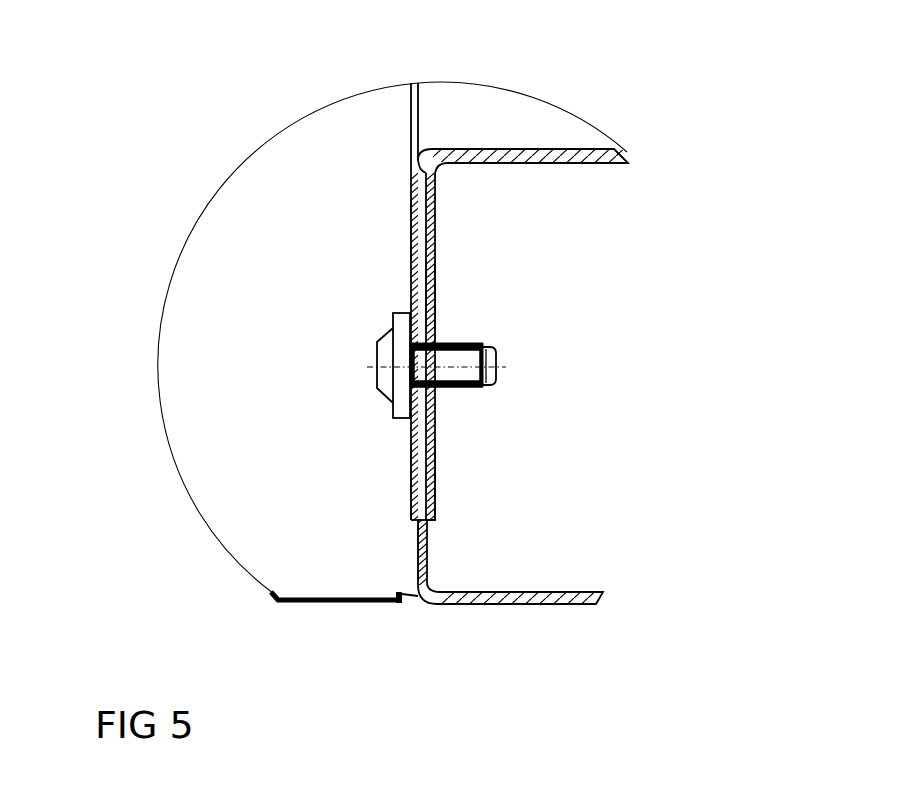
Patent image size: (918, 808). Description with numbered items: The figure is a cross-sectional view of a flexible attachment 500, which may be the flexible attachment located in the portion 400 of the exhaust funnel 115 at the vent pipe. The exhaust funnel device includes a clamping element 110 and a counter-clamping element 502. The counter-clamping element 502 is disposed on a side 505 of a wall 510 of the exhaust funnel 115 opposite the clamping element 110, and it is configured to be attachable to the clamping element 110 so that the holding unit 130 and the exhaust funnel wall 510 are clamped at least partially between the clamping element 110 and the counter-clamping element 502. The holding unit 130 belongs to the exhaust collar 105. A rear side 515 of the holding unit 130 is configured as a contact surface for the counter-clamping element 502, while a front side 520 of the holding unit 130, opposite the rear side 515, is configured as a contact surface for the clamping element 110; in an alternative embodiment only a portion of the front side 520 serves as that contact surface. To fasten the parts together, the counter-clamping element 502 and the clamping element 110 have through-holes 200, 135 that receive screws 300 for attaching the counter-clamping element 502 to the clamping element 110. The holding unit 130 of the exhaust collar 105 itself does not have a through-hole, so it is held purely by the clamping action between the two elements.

The exhaust collar 105 is at (515, 148).
The clamping element 110 is at (410, 483).
The exhaust funnel 115 is at (490, 605).
The holding unit 130 is at (412, 173).
The through-hole 135 is at (418, 350).
The through-hole 200 is at (443, 397).
The screw 300 is at (377, 355).
The portion 400 is at (245, 157).
The flexible attachment 500 is at (325, 158).
The counter-clamping element 502 is at (433, 295).
The side 505 is at (440, 553).
The wall 510 is at (417, 547).
The rear side 515 is at (433, 213).
The front side 520 is at (410, 230).